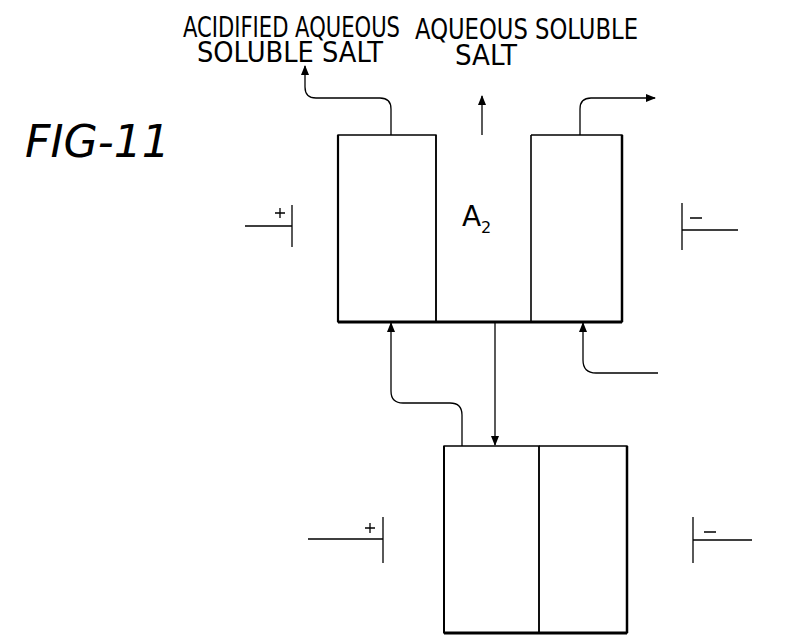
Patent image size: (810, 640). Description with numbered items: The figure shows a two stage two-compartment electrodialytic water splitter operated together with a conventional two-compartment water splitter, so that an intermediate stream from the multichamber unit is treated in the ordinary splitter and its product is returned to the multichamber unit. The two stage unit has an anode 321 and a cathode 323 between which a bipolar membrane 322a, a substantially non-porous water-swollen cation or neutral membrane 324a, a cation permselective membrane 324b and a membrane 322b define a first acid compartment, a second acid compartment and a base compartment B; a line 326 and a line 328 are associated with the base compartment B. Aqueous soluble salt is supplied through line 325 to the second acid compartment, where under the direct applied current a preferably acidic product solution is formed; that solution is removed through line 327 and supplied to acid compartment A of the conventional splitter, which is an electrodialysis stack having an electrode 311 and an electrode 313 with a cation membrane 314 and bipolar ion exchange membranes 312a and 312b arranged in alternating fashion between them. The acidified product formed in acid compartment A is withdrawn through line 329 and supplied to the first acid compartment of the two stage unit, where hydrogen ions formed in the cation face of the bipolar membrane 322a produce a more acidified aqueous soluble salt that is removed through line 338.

The electrode 311 is at (382, 548).
The bipolar ion exchange membrane 312a is at (446, 608).
The bipolar ion exchange membrane 312b is at (629, 608).
The electrode 313 is at (697, 558).
The cation membrane 314 is at (541, 608).
The anode 321 is at (290, 234).
The bipolar membrane 322a is at (340, 298).
The cathode compartment of second cell 322b is at (624, 298).
The cathode 323 is at (685, 247).
The substantially non-porous, water-swollen cation or neutral membrane 324a is at (438, 298).
The cation permselective membrane 324b is at (533, 298).
The line 325 is at (486, 117).
The inlet to cathode compartment 326 is at (605, 372).
The line 327 is at (496, 388).
The outlet from cathode compartment 328 is at (583, 117).
The line 329 is at (460, 426).
The line 338 is at (393, 118).